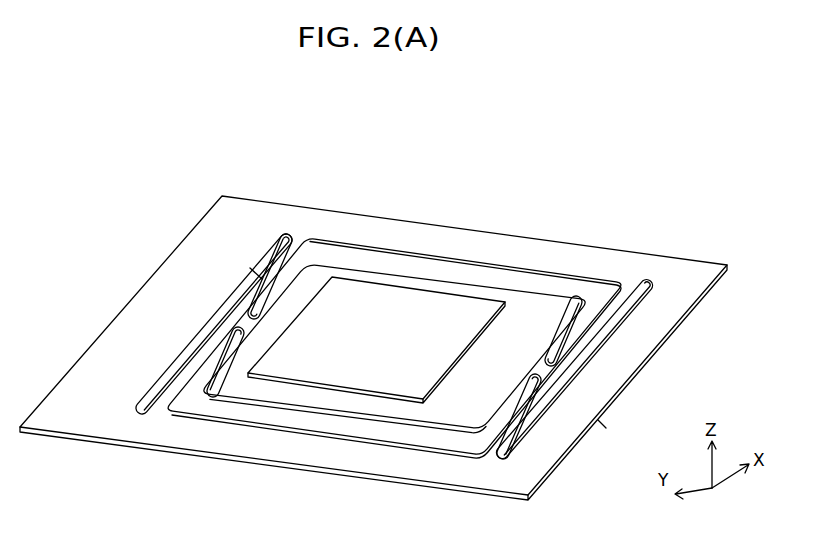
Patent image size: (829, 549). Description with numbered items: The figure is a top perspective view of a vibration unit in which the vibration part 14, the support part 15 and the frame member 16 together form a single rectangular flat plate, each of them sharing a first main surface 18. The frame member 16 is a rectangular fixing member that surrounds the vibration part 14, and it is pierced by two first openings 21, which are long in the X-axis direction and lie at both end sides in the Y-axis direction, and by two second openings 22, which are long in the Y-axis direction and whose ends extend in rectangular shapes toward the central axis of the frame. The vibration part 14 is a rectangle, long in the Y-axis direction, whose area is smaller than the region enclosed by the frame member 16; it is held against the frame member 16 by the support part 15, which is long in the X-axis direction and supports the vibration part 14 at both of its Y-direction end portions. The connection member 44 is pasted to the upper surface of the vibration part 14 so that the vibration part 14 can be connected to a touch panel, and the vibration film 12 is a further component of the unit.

The vibration film 12 is at (258, 274).
The vibration part 14 is at (352, 263).
The support part 15 is at (220, 327).
The frame member 16 is at (683, 278).
The first main surface 18 is at (501, 282).
The first opening 21 is at (145, 406).
The second opening 22 is at (196, 421).
The connection member 44 is at (333, 376).